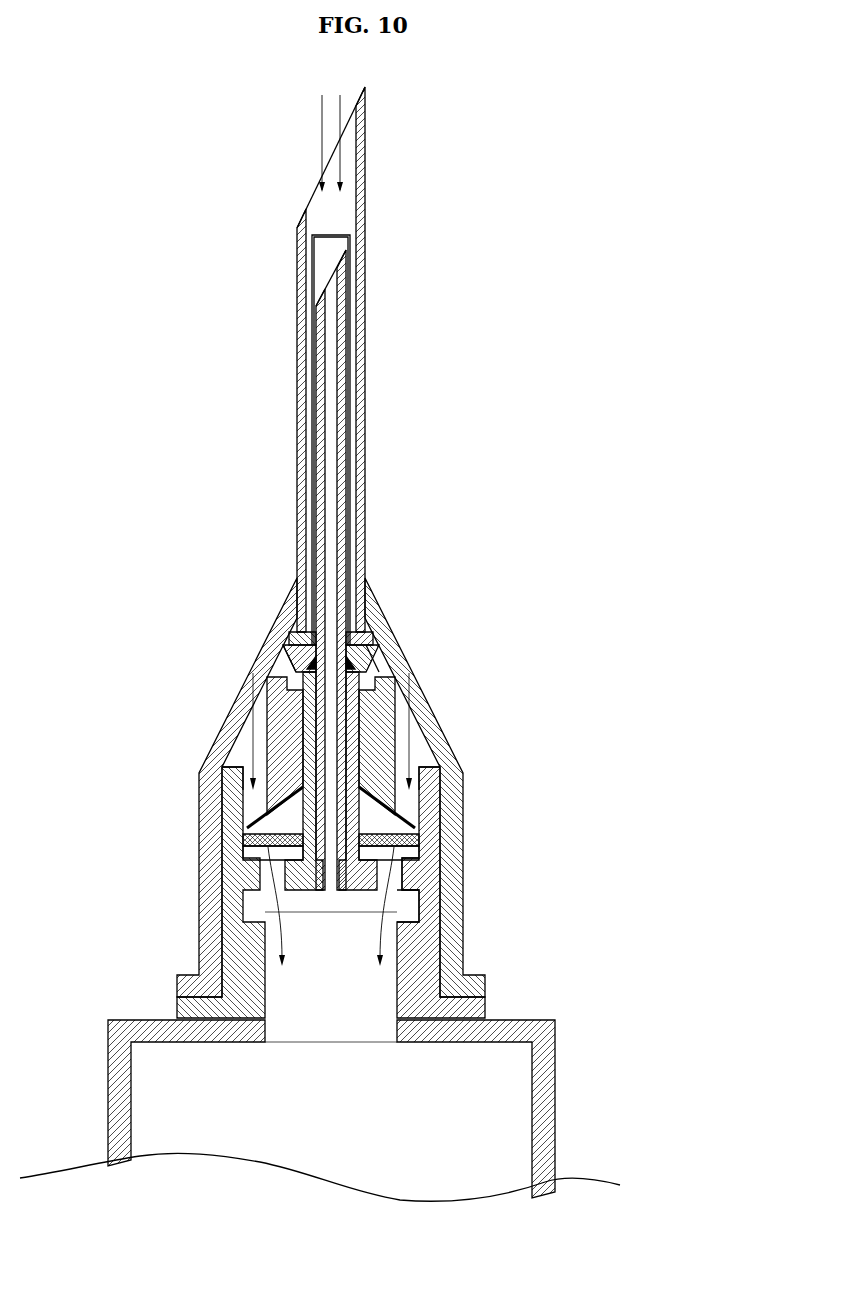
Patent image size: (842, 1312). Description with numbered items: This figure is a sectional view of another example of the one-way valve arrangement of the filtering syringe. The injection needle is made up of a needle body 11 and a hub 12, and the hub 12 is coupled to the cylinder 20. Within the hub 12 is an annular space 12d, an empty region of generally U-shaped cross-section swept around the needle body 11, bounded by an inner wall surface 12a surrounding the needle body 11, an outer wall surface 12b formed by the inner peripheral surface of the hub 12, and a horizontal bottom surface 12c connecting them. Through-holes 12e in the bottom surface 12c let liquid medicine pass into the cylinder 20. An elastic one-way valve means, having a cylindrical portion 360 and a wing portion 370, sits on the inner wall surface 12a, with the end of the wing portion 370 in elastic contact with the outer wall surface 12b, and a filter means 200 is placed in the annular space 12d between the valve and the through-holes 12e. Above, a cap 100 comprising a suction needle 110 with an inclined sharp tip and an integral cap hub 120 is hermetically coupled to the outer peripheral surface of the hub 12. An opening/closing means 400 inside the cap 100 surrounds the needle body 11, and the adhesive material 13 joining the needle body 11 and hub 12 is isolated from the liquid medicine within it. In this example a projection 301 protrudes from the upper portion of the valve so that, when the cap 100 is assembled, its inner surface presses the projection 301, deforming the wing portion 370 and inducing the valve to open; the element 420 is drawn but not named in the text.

The needle body 11 is at (332, 342).
The hub 12 is at (230, 875).
The inner wall surface 12a is at (247, 787).
The outer wall surface 12b is at (403, 740).
The bottom surface 12c is at (423, 857).
The annular space 12d is at (428, 797).
The through-holes 12e is at (420, 870).
The adhesive material 13 is at (283, 672).
The cylinder 20 is at (553, 1135).
The cap 100 is at (425, 573).
The suction needle 110 is at (363, 178).
The cap hub 120 is at (452, 937).
The filter means 200 is at (247, 847).
The projection 301 is at (295, 688).
The cylindrical portion 360 is at (293, 728).
The wing portion 370 is at (412, 820).
The opening/closing means 400 is at (330, 233).
The support plate 420 is at (397, 642).